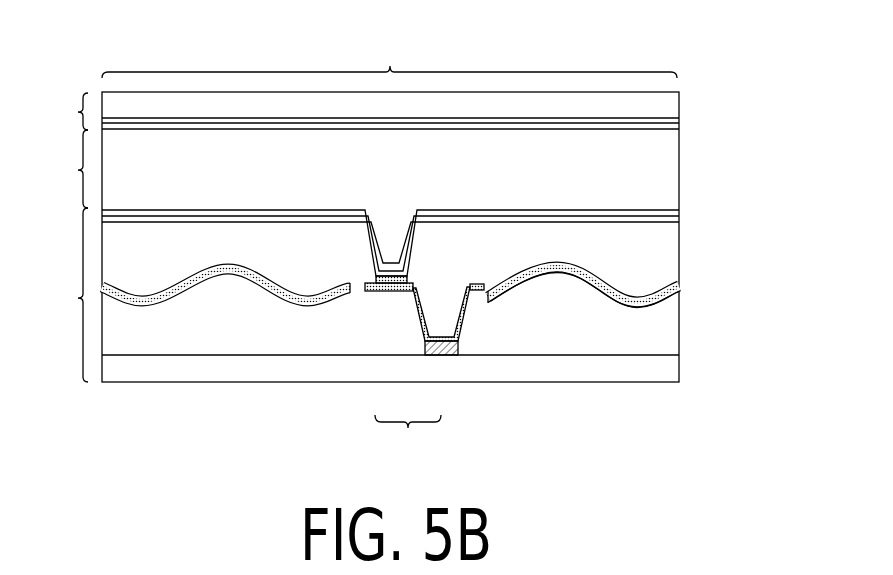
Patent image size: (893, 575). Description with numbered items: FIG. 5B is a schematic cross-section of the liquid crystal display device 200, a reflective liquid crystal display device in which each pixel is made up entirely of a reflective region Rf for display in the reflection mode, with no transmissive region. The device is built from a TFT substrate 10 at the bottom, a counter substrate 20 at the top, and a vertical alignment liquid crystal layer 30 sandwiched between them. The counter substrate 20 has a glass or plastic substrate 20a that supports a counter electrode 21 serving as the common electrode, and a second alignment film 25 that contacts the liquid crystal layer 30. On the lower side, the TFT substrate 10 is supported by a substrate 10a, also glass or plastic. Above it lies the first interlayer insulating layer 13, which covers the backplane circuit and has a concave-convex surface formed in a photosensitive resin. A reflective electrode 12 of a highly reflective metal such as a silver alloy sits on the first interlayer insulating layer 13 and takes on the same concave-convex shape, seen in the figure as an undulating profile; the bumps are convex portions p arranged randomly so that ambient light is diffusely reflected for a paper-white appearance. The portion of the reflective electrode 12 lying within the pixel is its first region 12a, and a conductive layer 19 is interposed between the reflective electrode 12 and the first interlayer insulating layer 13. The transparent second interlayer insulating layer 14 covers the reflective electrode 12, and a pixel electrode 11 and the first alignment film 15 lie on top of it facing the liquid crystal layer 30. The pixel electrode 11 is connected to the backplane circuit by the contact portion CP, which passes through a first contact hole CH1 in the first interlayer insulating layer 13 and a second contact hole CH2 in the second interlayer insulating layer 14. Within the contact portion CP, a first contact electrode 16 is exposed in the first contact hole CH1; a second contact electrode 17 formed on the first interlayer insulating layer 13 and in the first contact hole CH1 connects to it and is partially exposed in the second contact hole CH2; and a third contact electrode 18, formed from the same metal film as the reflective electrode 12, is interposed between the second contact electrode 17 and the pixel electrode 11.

The liquid crystal display device 200 is at (708, 74).
The counter substrate 20 is at (398, 124).
The substrate 20a is at (662, 110).
The counter electrode 21 is at (680, 122).
The second alignment film 25 is at (680, 128).
The liquid crystal layer 30 is at (69, 169).
The TFT substrate 10 is at (399, 307).
The substrate 10a is at (663, 368).
The pixel electrode 11 is at (448, 212).
The first alignment film 15 is at (680, 210).
The second interlayer insulating layer 14 is at (663, 248).
The first interlayer insulating layer 13 is at (663, 325).
The reflective electrode 12 is at (390, 271).
The first region 12a is at (545, 268).
The conductive layer 19 is at (552, 278).
The first contact electrode 16 is at (438, 356).
The second contact electrode 17 is at (406, 291).
The third contact electrode 18 is at (381, 291).
The first contact hole CH1 is at (441, 312).
The second contact hole CH2 is at (389, 230).
The contact portion CP is at (408, 434).
The reflective region Rf is at (389, 59).
The convex portion p is at (565, 262).